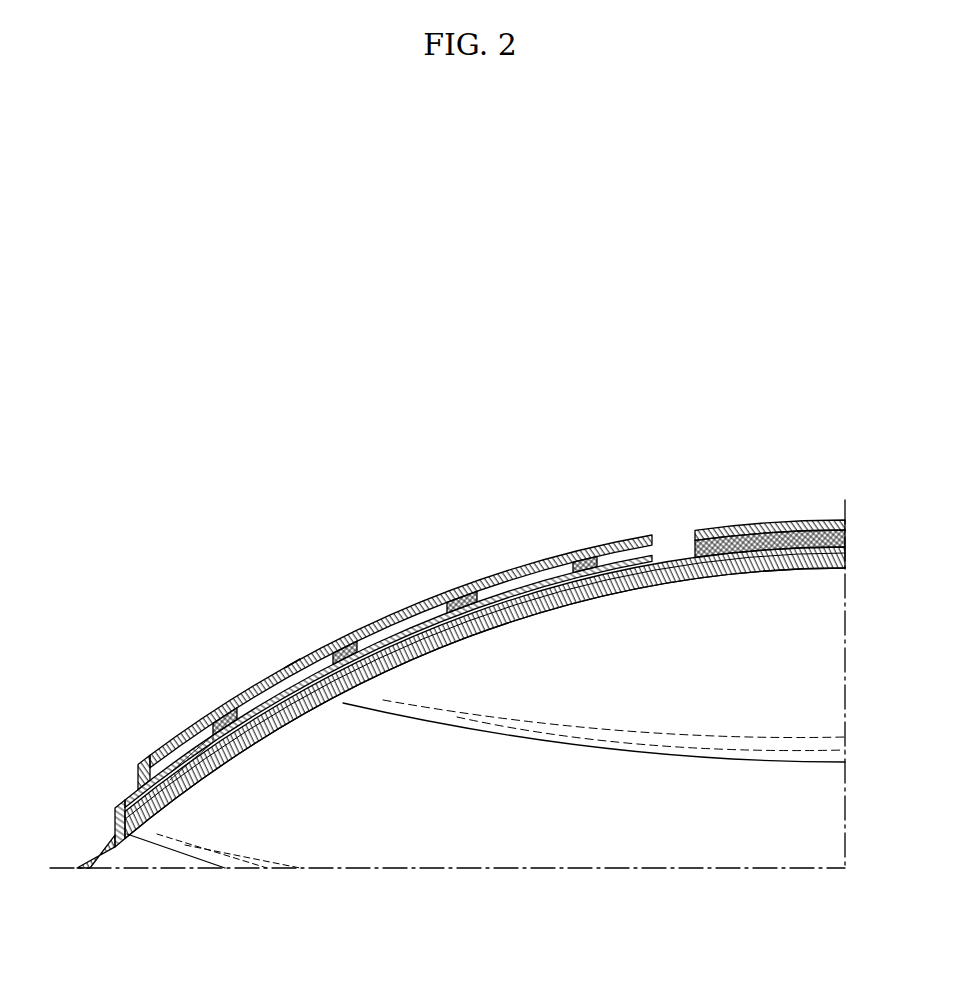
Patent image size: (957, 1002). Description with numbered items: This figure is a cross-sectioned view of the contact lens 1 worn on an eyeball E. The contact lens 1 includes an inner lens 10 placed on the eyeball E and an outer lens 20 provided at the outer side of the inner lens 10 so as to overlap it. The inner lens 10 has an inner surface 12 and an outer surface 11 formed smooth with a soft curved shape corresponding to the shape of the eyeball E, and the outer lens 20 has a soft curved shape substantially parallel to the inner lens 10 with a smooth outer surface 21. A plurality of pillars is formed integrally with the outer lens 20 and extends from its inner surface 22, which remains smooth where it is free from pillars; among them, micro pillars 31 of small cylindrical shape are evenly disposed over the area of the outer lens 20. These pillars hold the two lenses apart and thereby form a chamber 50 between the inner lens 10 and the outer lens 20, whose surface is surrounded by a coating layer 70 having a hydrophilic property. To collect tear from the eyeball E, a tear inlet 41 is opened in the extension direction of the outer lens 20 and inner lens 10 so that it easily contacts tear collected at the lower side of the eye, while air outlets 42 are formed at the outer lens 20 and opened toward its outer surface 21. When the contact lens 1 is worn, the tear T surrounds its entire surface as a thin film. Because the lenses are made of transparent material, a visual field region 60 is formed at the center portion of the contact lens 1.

The contact lens 1 is at (453, 634).
The inner lens 10 is at (461, 707).
The outer surface 11 is at (398, 640).
The inner surface 12 is at (480, 645).
The outer lens 20 is at (384, 639).
The outer surface 21 is at (481, 582).
The inner surface 22 is at (537, 562).
The micro pillar 31 is at (228, 712).
The tear inlet 41 is at (137, 790).
The air outlet 42 is at (667, 548).
The chamber 50 is at (292, 664).
The visual field region 60 is at (778, 525).
The coating layer 70 is at (217, 725).
The tear T is at (160, 748).
The eyeball E is at (806, 658).